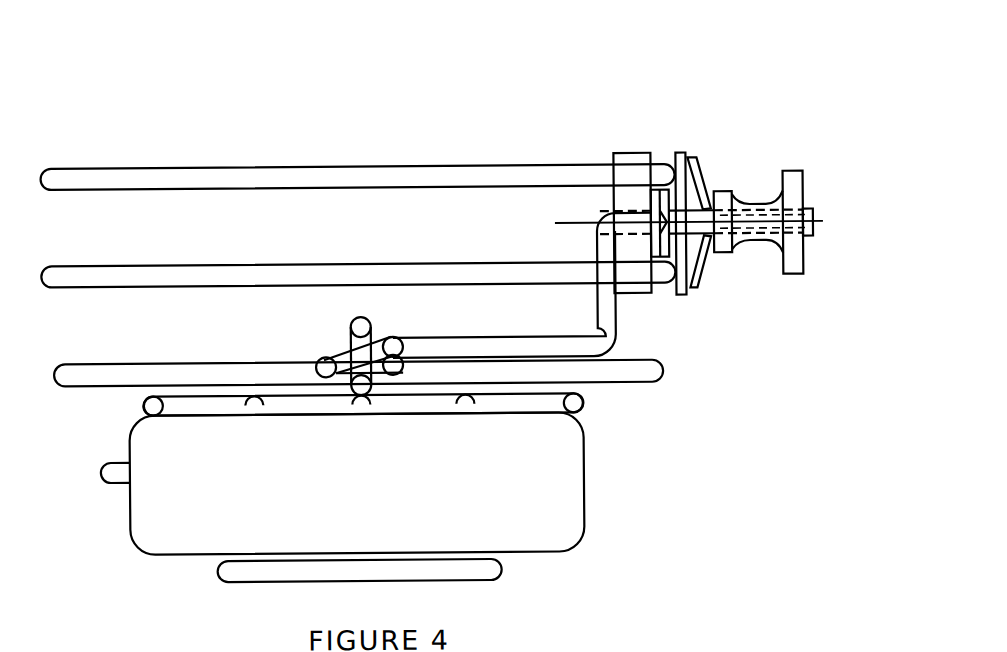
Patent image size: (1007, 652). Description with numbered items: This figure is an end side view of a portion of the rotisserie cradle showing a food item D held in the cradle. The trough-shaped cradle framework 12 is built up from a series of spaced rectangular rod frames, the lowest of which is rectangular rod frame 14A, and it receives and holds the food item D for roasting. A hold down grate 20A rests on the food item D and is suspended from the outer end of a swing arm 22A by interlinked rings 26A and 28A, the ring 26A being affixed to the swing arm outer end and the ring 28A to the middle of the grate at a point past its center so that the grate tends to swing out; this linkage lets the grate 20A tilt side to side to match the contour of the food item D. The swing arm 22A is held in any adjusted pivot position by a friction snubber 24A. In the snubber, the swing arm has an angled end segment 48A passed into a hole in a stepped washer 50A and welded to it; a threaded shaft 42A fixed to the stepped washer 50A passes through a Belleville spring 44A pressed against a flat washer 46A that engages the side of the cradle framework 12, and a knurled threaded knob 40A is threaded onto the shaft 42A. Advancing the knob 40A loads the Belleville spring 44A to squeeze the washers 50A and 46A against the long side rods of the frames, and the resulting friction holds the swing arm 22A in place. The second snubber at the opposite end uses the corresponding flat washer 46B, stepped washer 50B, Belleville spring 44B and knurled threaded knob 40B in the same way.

The cradle framework 12 is at (268, 163).
The rectangular rod frame 14A is at (385, 594).
The hold down grate 20A is at (433, 435).
The swing arm 22A is at (549, 284).
The friction snubber 24A is at (720, 135).
The ring 26A is at (307, 348).
The ring 28A is at (412, 344).
The knurled threaded knob 40A is at (797, 277).
The threaded shaft 42A is at (811, 200).
The Belleville spring 44A is at (707, 283).
The flat washer 46A is at (680, 151).
The angled end segment 48A is at (643, 215).
The stepped washer 50A is at (632, 151).
The food item D is at (393, 483).
The flat washer 46B is at (669, 648).
The stepped washer 50B is at (608, 640).
The Belleville spring 44B is at (758, 649).
The knurled threaded knob 40B is at (833, 649).